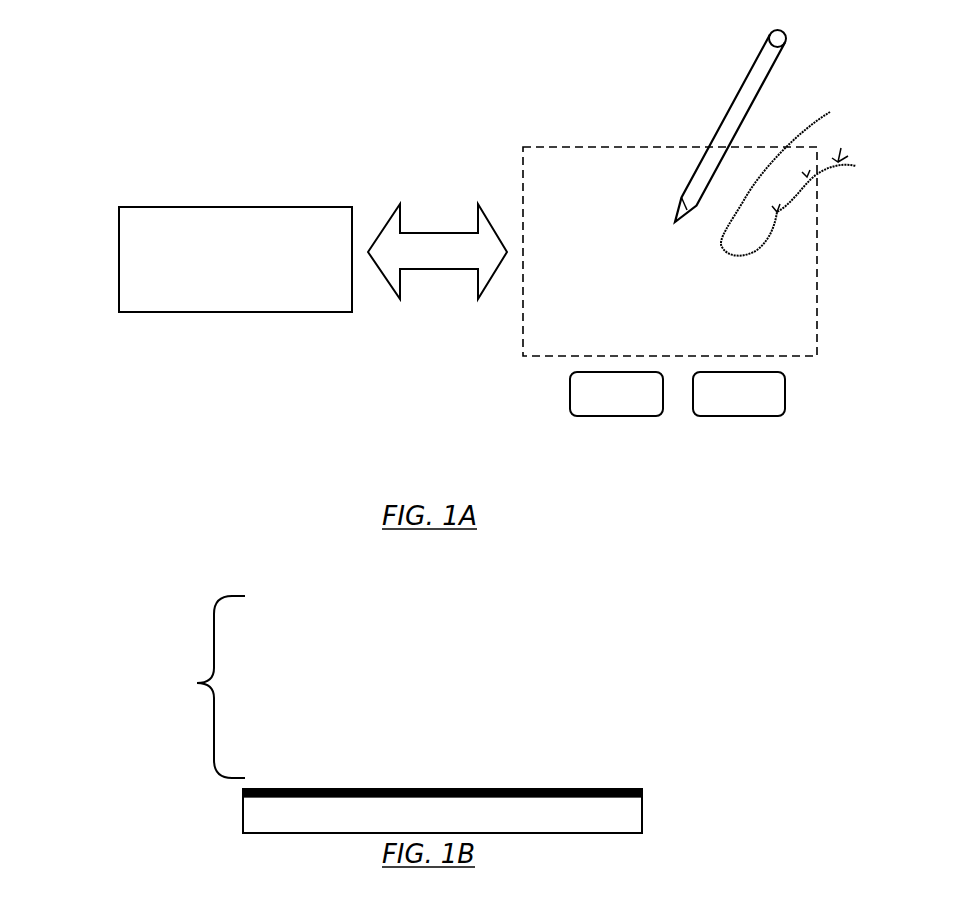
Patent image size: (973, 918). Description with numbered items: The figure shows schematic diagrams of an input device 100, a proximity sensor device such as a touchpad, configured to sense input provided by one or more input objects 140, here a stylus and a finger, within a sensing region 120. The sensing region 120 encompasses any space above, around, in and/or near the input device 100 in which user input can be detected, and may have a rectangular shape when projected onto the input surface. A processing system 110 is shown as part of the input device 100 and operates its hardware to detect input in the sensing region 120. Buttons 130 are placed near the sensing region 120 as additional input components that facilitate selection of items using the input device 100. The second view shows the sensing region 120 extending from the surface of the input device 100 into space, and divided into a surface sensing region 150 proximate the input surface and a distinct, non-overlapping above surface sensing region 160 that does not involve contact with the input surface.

In FIG. 1A, the input device 100 is at (184, 97).
In FIG. 1B, the input device 100 is at (400, 822).
In FIG. 1A, the processing system 110 is at (119, 226).
In FIG. 1A, the sensing region 120 is at (817, 252).
In FIG. 1B, the sensing region 120 is at (659, 602).
In FIG. 1A, the buttons 130 is at (657, 415).
In FIG. 1A, the input objects 140 is at (808, 60).
In FIG. 1B, the surface sensing region 150 is at (642, 789).
In FIG. 1B, the above surface sensing region 160 is at (175, 693).